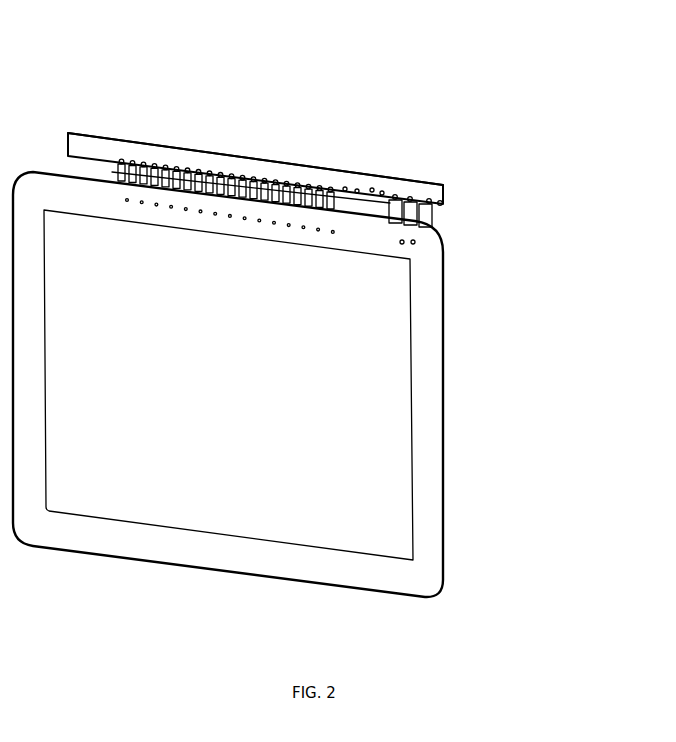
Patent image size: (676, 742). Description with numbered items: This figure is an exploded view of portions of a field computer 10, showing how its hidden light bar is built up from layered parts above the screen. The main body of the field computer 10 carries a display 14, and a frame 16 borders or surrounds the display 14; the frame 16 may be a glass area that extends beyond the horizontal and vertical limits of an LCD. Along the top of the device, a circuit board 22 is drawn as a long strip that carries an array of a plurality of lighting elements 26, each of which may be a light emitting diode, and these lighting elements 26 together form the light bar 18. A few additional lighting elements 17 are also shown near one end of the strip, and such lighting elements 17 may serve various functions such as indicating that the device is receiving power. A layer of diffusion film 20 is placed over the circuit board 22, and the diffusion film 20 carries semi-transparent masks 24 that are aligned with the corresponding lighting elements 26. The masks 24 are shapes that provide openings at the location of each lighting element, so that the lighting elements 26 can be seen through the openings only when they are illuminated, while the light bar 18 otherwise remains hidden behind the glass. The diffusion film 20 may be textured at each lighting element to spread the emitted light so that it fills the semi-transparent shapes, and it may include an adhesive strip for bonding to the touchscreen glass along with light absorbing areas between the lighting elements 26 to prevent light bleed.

The field computer 10 is at (322, 109).
The display 14 is at (392, 430).
The frame 16 is at (410, 541).
The lighting elements 17 is at (445, 208).
The light bar 18 is at (418, 184).
The diffusion film 20 is at (433, 217).
The circuit board 22 is at (446, 189).
The semi-transparent masks 24 is at (127, 201).
The lighting elements 26 is at (153, 150).